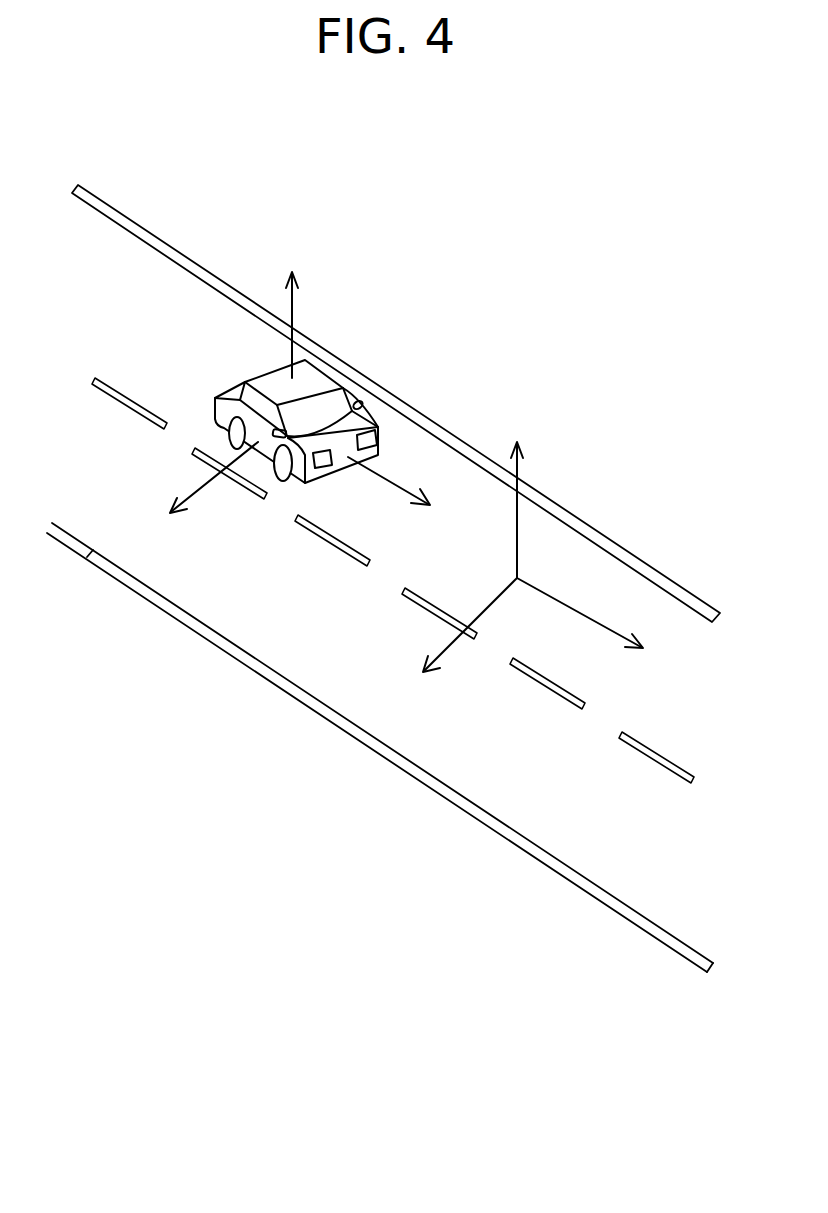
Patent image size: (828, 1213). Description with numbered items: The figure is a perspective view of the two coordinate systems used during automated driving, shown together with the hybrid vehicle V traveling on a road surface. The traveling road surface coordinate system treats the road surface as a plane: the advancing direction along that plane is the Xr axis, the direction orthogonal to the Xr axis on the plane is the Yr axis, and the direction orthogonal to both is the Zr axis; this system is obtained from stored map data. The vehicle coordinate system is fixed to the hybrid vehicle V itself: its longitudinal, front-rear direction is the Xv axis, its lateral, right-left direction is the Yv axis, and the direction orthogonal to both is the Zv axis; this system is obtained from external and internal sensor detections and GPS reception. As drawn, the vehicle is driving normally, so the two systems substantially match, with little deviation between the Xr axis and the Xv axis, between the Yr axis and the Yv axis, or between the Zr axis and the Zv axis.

The hybrid vehicle V is at (330, 377).
The Zv axis Zv is at (293, 313).
The Xv axis Xv is at (405, 491).
The Yv axis Yv is at (202, 488).
The Zr axis Zr is at (517, 496).
The Xr axis Xr is at (594, 624).
The Yr axis Yr is at (456, 636).